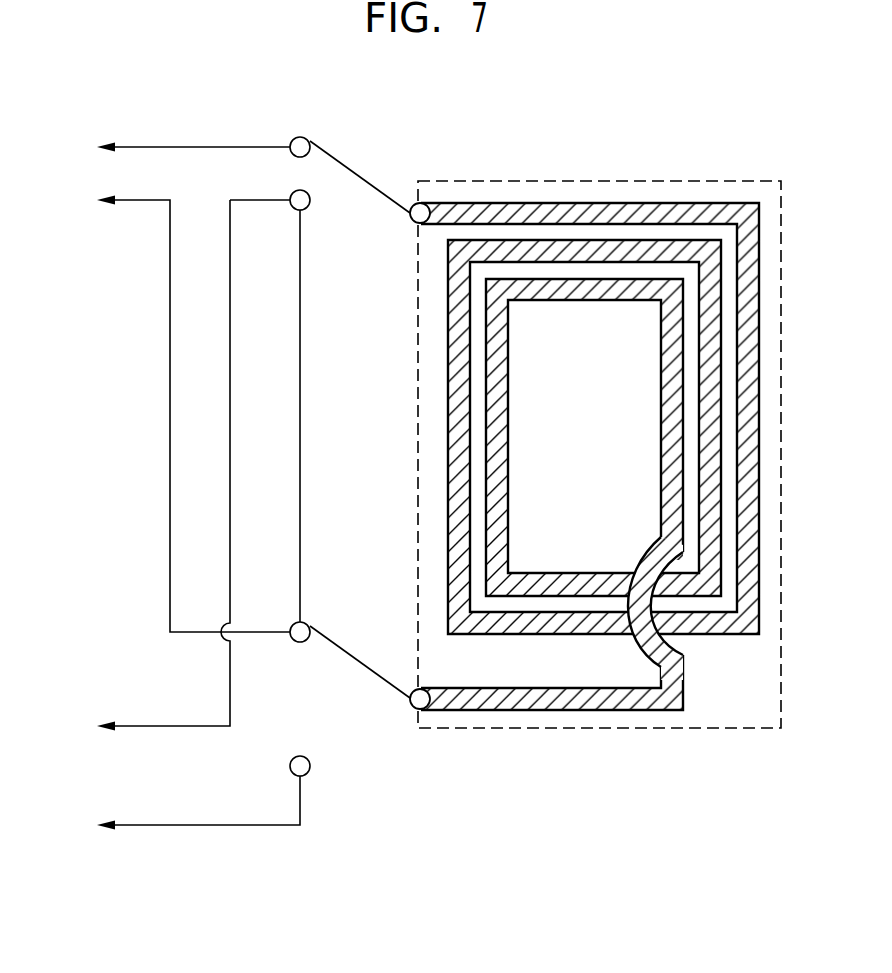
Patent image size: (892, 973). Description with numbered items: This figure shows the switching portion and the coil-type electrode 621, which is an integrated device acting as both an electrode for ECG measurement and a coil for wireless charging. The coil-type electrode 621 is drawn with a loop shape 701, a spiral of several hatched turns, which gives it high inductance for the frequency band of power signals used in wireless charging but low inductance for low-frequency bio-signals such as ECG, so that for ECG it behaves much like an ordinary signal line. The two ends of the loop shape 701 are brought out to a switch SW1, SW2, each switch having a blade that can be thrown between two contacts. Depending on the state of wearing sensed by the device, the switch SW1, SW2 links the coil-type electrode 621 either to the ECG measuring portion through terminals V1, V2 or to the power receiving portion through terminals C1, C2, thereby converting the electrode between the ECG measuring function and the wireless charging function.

The loop shape 701 is at (592, 203).
The coil-type electrode 621 is at (700, 181).
The switch SW1 is at (350, 160).
The switch SW2 is at (350, 646).
The power receiving portion terminal C1 is at (179, 148).
The power receiving portion terminal C2 is at (149, 470).
The ECG measuring portion terminal V1 is at (189, 410).
The ECG measuring portion terminal V2 is at (189, 797).